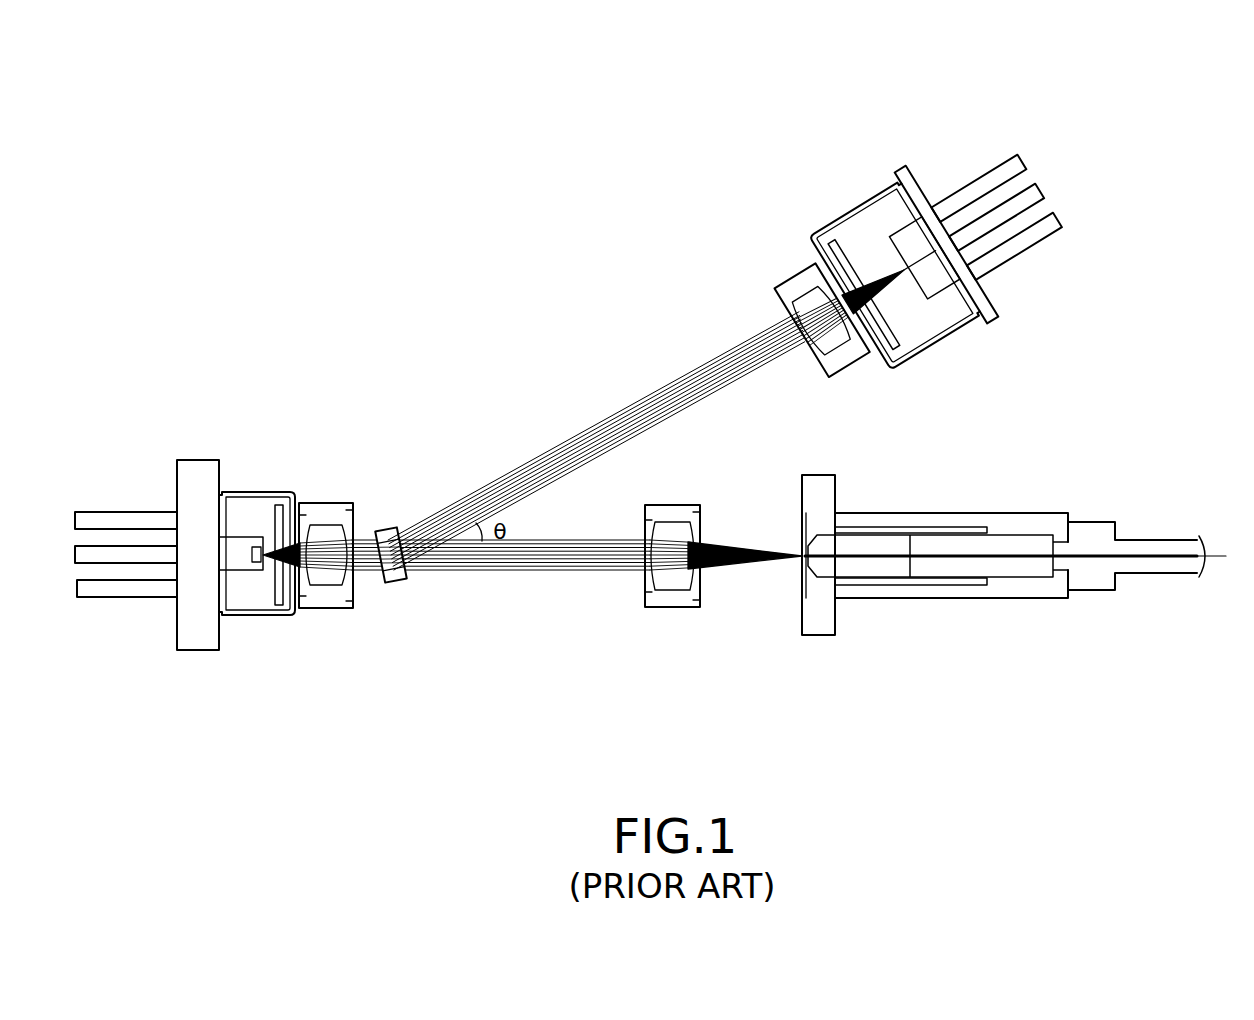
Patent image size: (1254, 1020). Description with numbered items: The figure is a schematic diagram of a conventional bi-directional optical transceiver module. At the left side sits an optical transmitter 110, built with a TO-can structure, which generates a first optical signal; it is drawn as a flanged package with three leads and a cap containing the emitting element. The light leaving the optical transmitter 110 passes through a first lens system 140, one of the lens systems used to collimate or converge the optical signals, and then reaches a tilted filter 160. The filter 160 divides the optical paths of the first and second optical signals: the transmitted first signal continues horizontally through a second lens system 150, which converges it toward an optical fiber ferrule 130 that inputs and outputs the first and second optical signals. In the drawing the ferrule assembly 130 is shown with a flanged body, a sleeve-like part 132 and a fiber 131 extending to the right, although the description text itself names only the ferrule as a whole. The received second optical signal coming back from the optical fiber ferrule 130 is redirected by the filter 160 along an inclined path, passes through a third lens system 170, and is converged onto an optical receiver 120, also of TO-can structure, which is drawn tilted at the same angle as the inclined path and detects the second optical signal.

The optical transmitter 110 is at (214, 438).
The optical receiver 120 is at (950, 116).
The optical fiber ferrule 130 is at (997, 607).
The optical fiber 131 is at (1140, 552).
The ferrule sleeve 132 is at (972, 598).
The first lens system 140 is at (323, 604).
The second lens system 150 is at (672, 606).
The filter 160 is at (398, 583).
The third lens system 170 is at (790, 284).